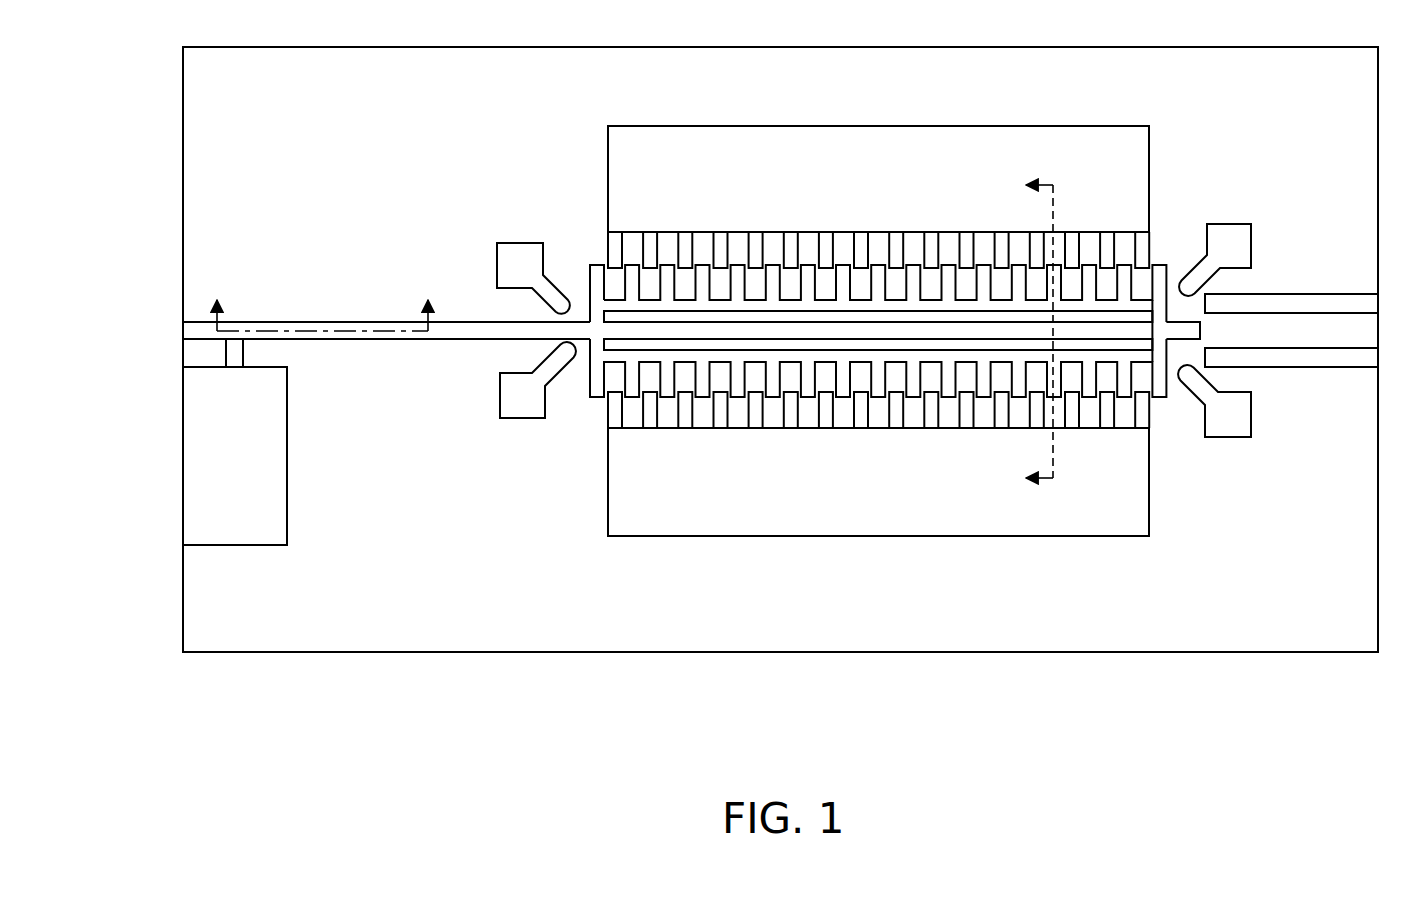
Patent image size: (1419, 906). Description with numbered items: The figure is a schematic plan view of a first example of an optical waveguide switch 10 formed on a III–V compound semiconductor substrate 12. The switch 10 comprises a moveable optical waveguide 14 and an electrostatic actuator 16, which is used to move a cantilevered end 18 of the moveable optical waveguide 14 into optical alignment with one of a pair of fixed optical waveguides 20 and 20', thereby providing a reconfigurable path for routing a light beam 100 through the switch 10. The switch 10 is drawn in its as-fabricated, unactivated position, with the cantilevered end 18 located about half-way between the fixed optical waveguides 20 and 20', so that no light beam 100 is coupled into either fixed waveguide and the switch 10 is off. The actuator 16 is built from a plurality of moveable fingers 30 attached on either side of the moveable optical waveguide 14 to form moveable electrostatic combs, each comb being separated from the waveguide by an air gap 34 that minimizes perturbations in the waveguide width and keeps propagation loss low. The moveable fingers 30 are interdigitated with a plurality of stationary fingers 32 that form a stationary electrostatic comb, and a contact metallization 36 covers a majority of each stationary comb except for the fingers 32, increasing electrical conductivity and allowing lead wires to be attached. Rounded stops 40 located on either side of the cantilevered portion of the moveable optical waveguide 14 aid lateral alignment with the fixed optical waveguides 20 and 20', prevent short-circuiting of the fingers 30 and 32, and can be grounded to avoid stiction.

The optical waveguide switch 10 is at (1256, 688).
The III–V compound semiconductor substrate 12 is at (780, 349).
The moveable optical waveguide 14 is at (456, 345).
The electrostatic actuator 16 is at (719, 365).
The cantilevered end 18 is at (1200, 330).
The fixed optical waveguide 20 is at (1291, 382).
The fixed optical waveguide 20' is at (1291, 279).
The moveable fingers 30 is at (590, 400).
The stationary fingers 32 is at (649, 412).
The air gap 34 is at (590, 318).
The contact metallization 36 is at (666, 335).
The stops 40 is at (874, 330).
The light beam 100 is at (176, 331).